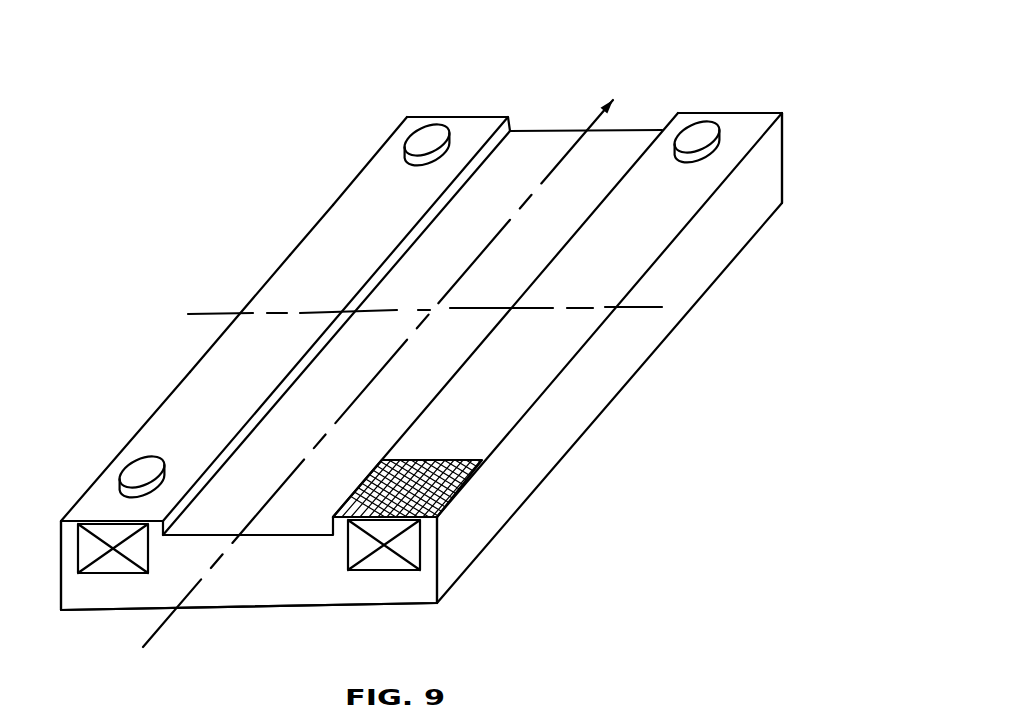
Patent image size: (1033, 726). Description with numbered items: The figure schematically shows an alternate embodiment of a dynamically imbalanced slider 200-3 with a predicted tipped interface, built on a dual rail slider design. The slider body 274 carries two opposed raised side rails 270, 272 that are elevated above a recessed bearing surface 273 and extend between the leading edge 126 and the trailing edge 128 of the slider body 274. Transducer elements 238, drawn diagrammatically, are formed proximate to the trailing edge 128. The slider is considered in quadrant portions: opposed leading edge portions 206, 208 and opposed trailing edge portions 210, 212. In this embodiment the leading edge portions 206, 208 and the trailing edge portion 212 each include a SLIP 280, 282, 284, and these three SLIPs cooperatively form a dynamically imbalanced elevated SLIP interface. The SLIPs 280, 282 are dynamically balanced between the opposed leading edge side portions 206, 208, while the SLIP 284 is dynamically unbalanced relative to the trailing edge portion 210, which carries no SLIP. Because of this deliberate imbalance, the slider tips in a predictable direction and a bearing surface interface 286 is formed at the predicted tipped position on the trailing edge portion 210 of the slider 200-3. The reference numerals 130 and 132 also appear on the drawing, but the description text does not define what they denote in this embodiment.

The dynamically imbalanced slider 200-3 is at (670, 62).
The leading edge 126 is at (537, 130).
The trailing edge 128 is at (262, 580).
The left rail / side 130 is at (188, 380).
The right top surface region 132 is at (696, 186).
The leading edge portion 206 is at (762, 117).
The leading edge portion 208 is at (331, 205).
The trailing edge portion 210 is at (530, 356).
The trailing edge portion 212 is at (158, 408).
The transducer elements 238 is at (87, 575).
The raised side rail 270 is at (288, 260).
The raised side rail 272 is at (592, 295).
The recessed bearing surface 273 is at (458, 263).
The slider body 274 is at (600, 205).
The SLIP 280 is at (705, 120).
The SLIP 282 is at (417, 120).
The SLIP 284 is at (126, 460).
The bearing surface interface 286 is at (440, 488).